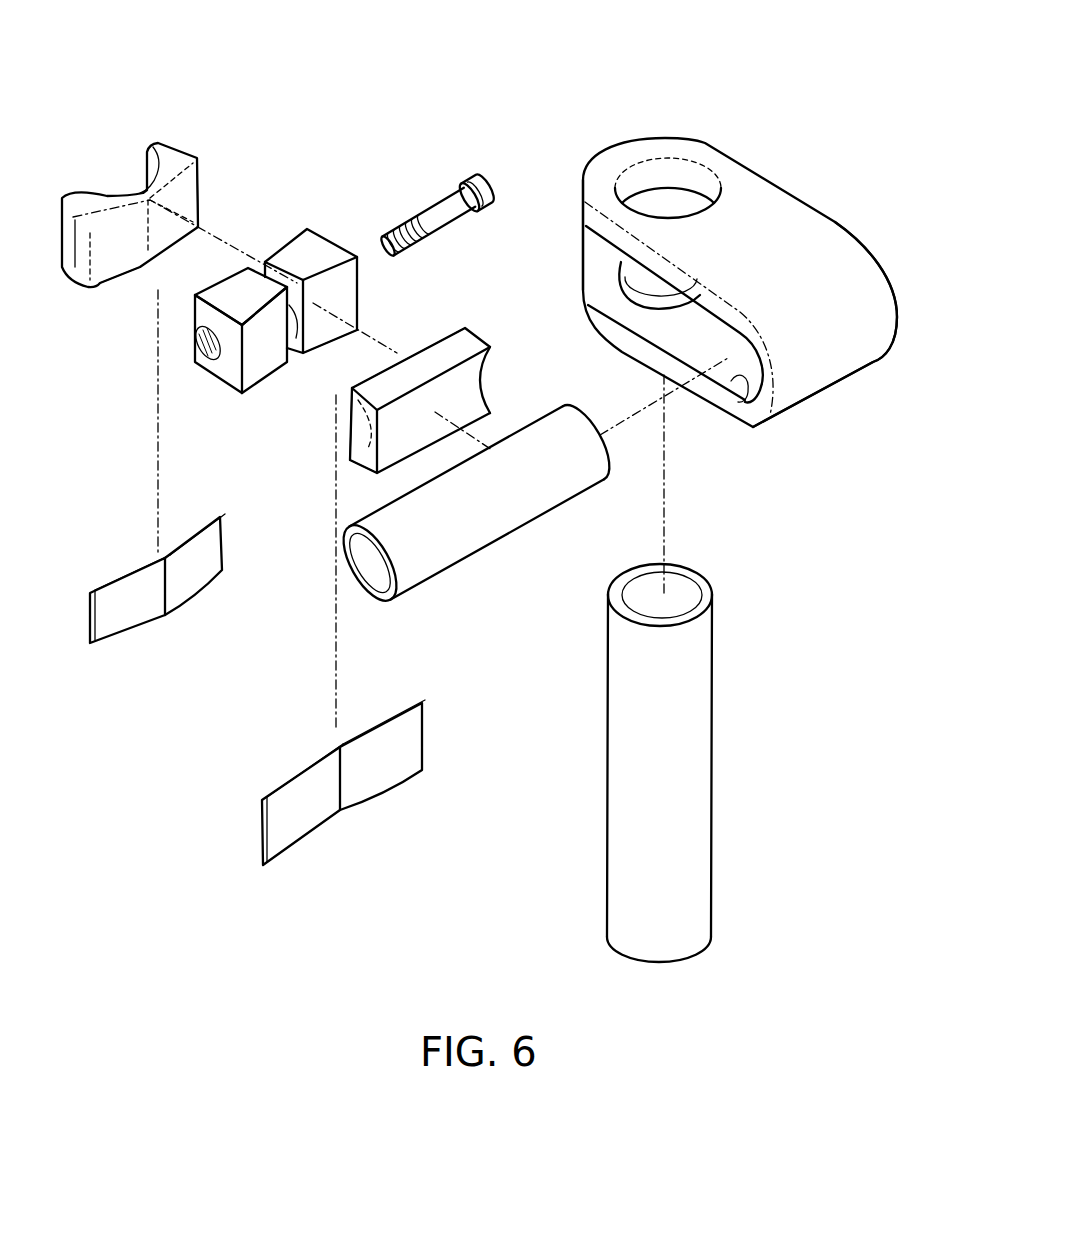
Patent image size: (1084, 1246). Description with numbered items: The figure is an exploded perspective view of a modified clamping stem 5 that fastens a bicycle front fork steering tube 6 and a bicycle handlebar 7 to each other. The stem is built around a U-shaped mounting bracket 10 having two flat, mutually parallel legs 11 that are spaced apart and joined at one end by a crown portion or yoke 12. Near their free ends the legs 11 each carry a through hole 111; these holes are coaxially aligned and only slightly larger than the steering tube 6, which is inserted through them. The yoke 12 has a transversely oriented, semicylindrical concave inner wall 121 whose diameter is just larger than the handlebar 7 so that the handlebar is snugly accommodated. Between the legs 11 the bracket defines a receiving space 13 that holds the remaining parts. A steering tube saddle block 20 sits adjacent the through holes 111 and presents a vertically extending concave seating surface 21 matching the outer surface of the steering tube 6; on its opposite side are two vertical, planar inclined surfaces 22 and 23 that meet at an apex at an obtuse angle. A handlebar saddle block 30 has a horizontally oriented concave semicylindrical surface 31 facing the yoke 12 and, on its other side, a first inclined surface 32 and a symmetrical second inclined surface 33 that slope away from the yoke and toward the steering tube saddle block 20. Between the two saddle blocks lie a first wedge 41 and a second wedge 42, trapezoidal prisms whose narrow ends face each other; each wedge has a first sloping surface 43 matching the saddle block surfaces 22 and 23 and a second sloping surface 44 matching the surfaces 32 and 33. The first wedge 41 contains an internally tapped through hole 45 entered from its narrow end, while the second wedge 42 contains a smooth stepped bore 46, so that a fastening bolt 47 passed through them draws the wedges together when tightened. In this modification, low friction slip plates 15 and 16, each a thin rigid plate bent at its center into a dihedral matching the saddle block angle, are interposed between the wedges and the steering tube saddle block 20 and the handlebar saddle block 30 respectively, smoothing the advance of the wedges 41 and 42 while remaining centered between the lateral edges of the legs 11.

The clamping stem 5 is at (713, 262).
The fork steering tube 6 is at (703, 792).
The handlebar 7 is at (433, 570).
The mounting bracket 10 is at (713, 262).
The legs 11 is at (697, 145).
The through hole 111 is at (647, 173).
The yoke 12 is at (833, 350).
The concave inner wall 121 is at (752, 427).
The receiving space 13 is at (690, 340).
The slip plate 15 is at (383, 777).
The slip plate 16 is at (130, 615).
The steering tube saddle block 20 is at (146, 192).
The concave seating surface 21 is at (137, 186).
The inclined surface 22 is at (100, 283).
The inclined surface 23 is at (190, 190).
The handlebar saddle block 30 is at (416, 378).
The semicylindrical surface 31 is at (350, 450).
The first inclined surface 32 is at (362, 377).
The second inclined surface 33 is at (440, 338).
The first wedge 41 is at (203, 379).
The second wedge 42 is at (322, 237).
The first sloping surface 43 is at (197, 263).
The second sloping surface 44 is at (345, 280).
The tapped through hole 45 is at (213, 360).
The stepped through hole bore 46 is at (355, 330).
The fastening bolt 47 is at (457, 197).